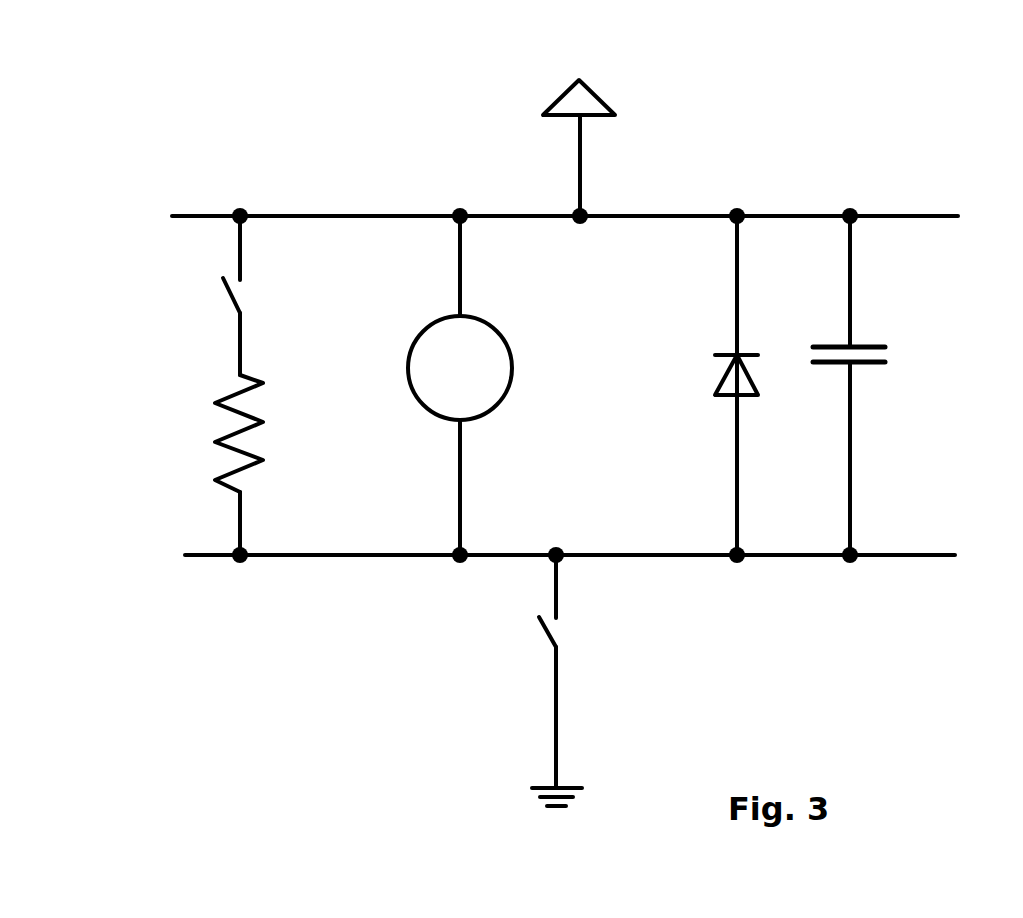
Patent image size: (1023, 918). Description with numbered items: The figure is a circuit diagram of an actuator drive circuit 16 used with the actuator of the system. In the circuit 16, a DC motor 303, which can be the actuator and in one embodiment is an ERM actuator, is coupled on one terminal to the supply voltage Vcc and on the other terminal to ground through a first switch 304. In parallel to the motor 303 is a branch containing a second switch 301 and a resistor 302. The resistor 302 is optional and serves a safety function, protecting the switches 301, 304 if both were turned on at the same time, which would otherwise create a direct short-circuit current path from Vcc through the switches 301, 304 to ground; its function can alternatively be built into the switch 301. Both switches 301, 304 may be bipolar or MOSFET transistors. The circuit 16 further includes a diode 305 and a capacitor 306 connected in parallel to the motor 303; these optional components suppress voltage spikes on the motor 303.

The actuator drive circuit 16 is at (763, 157).
The second switch 301 is at (237, 322).
The resistor 302 is at (232, 427).
The DC motor 303 is at (407, 366).
The first switch 304 is at (548, 643).
The diode 305 is at (715, 382).
The capacitor 306 is at (887, 358).